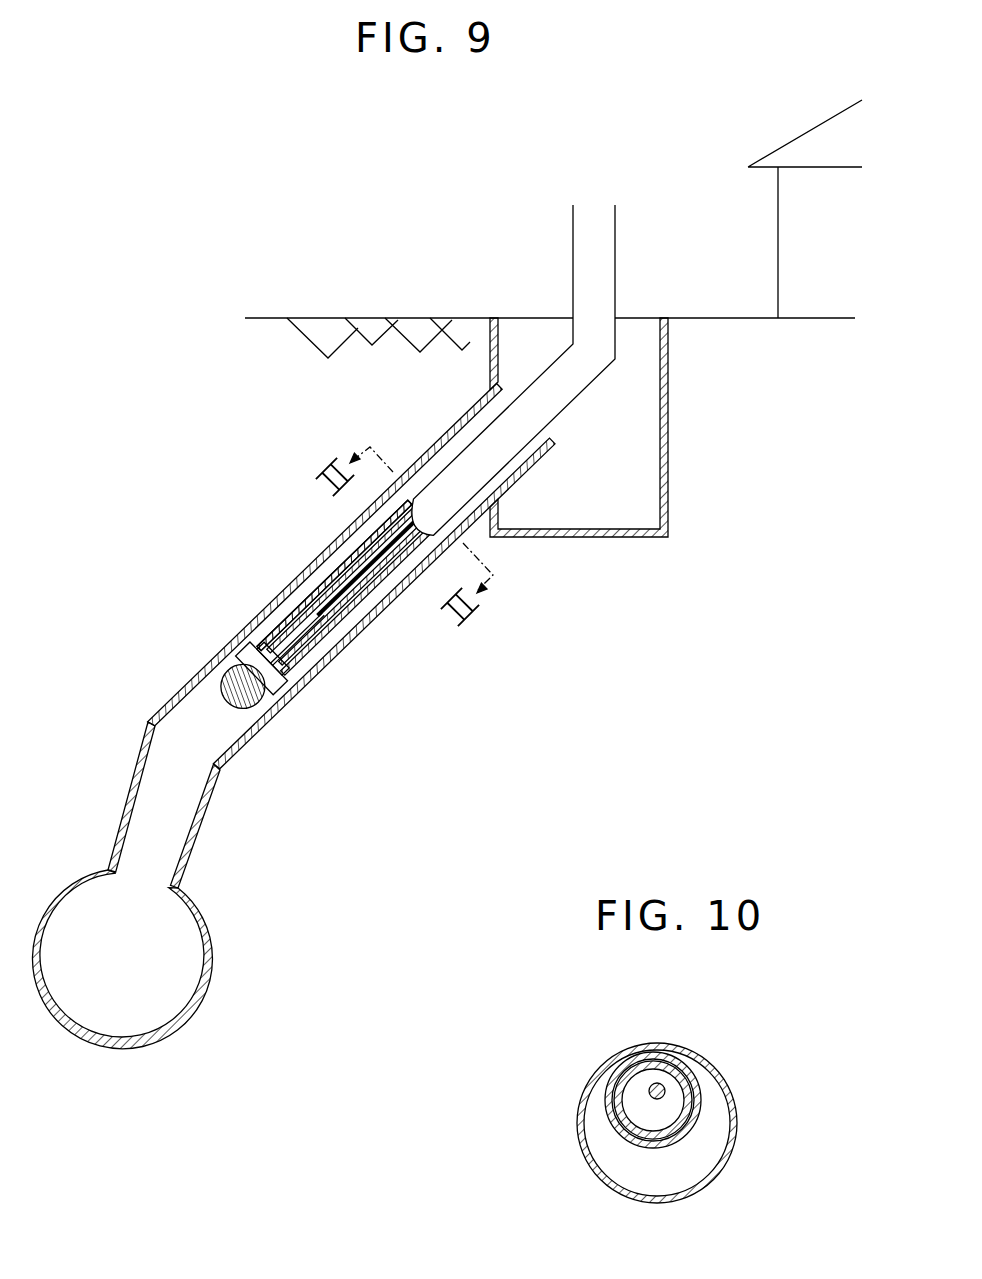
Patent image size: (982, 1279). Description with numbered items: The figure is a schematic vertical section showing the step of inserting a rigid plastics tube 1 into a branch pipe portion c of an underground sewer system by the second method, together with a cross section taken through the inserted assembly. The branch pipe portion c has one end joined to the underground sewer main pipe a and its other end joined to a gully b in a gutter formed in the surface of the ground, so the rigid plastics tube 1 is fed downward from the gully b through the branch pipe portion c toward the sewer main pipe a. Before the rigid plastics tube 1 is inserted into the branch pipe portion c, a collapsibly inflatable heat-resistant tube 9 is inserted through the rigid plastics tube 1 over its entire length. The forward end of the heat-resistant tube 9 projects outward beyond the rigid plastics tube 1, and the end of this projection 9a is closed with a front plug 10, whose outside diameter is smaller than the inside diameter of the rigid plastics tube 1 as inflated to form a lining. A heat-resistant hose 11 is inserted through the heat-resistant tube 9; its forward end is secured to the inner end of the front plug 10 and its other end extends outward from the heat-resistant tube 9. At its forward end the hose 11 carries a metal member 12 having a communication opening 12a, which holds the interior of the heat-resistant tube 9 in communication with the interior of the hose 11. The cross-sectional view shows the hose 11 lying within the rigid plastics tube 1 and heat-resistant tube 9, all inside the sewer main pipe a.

In FIG. 9, the rigid plastics tube 1 is at (380, 603).
In FIG. 10, the rigid plastics tube 1 is at (702, 1100).
In FIG. 9, the collapsibly inflatable heat-resistant tube 9 is at (400, 587).
In FIG. 10, the collapsibly inflatable heat-resistant tube 9 is at (612, 1103).
In FIG. 9, the projection 9a is at (307, 603).
In FIG. 9, the front plug 10 is at (240, 716).
In FIG. 9, the heat-resistant hose 11 is at (297, 643).
In FIG. 10, the heat-resistant hose 11 is at (667, 1090).
In FIG. 9, the metal member 12 is at (248, 642).
In FIG. 9, the communication opening 12a is at (227, 683).
In FIG. 9, the underground sewer main pipe a is at (217, 968).
In FIG. 10, the underground sewer main pipe a is at (728, 1143).
In FIG. 9, the gully b is at (667, 454).
In FIG. 9, the branch pipe portion c is at (443, 438).